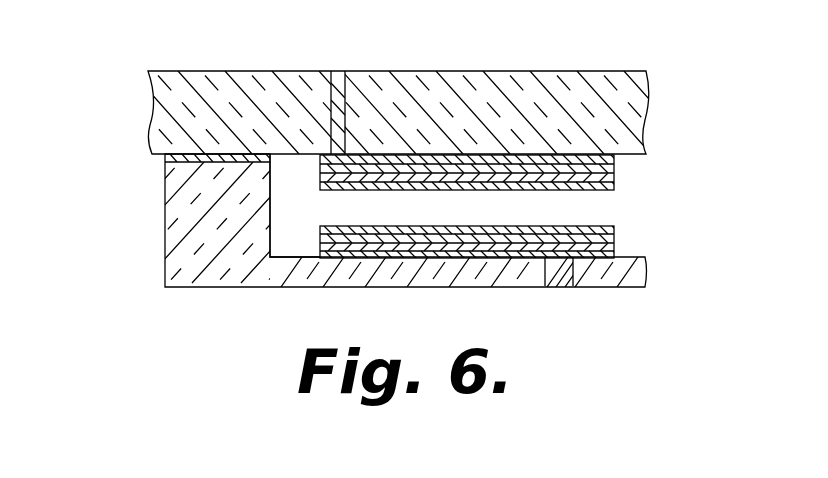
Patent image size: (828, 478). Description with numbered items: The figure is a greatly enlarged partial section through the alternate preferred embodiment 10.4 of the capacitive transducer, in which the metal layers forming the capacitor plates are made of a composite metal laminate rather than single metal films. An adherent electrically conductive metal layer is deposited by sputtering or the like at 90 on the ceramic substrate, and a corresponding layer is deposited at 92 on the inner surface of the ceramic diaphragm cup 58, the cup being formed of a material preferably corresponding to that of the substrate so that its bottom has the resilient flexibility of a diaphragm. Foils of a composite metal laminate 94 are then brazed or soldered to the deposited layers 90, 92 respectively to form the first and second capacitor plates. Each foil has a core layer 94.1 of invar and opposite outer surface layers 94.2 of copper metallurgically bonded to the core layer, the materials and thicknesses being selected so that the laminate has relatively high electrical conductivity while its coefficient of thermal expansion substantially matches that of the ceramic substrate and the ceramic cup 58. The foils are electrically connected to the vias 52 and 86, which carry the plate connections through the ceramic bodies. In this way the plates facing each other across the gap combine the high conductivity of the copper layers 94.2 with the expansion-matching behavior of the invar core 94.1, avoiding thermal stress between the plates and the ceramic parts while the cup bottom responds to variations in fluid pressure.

The capacitive transducer embodiment 10.4 is at (666, 123).
The via 52 is at (340, 72).
The ceramic diaphragm cup 58 is at (222, 284).
The via 86 is at (564, 286).
The deposited electrically conductive metal layer 90 is at (614, 157).
The deposited electrically conductive metal layer 92 is at (614, 256).
The composite metal laminate 94 is at (205, 47).
The core layer 94.1 is at (614, 236).
The outer surface layers 94.2 is at (400, 170).